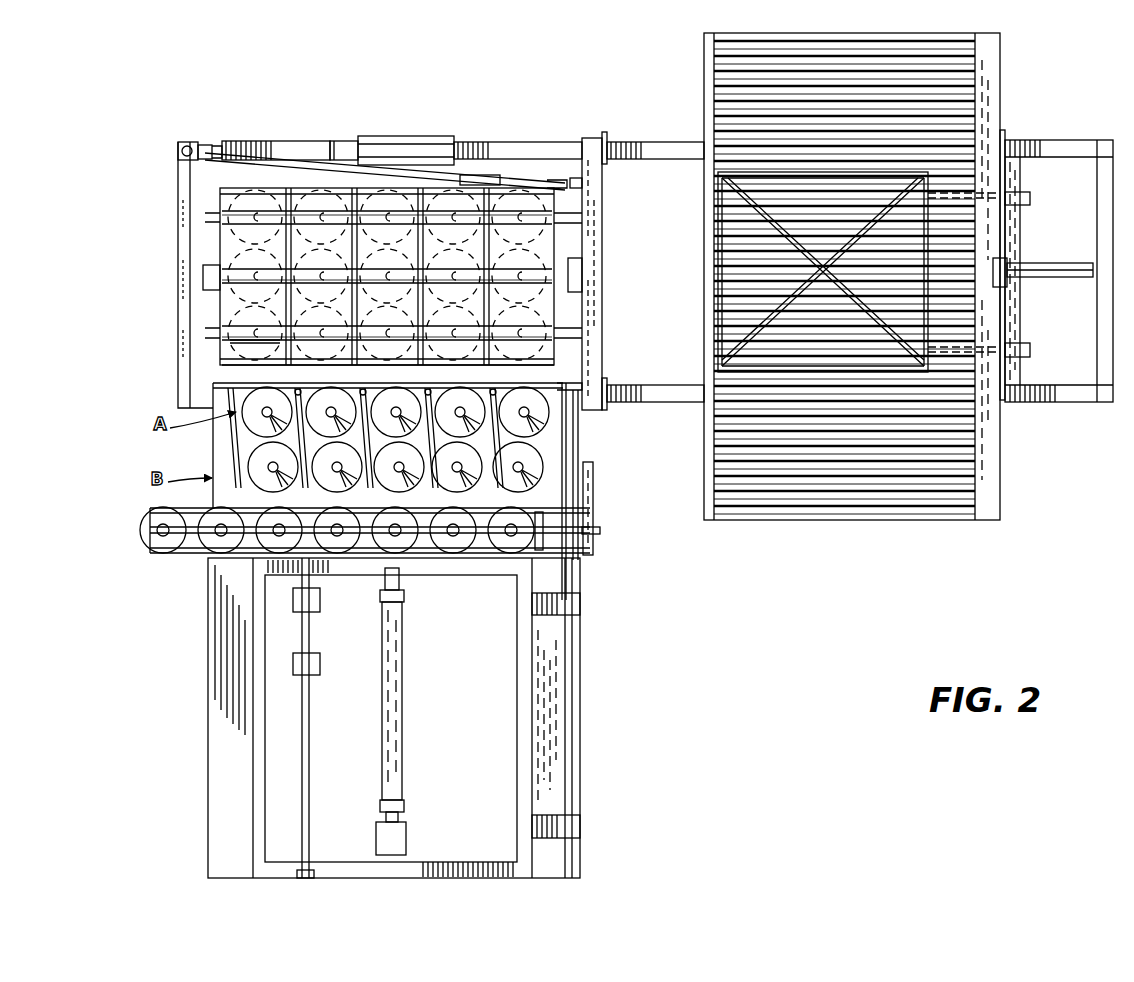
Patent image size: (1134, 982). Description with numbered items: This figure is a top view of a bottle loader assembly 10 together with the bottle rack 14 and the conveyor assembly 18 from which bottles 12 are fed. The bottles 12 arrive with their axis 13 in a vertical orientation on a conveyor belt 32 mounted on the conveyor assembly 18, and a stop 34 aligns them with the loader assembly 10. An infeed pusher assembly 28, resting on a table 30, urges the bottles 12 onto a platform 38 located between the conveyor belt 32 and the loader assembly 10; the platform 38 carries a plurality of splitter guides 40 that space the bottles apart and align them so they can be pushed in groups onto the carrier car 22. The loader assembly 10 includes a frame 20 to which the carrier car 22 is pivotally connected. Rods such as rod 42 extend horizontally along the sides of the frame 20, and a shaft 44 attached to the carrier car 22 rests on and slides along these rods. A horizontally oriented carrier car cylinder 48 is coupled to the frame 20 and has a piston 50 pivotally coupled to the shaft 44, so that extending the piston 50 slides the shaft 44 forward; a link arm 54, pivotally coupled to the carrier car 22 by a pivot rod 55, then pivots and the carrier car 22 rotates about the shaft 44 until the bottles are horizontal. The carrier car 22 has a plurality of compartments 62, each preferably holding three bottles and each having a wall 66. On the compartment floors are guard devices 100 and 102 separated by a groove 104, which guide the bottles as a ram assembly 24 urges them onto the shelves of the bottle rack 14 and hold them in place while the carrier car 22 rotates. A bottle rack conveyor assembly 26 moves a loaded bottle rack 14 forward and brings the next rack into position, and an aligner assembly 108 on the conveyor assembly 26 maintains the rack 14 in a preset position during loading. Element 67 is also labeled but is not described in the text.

The bottle loader assembly 10 is at (583, 90).
The bottles 12 is at (240, 444).
The axis 13 is at (548, 460).
The bottle rack 14 is at (682, 418).
The conveyor assembly 18 is at (594, 555).
The frame 20 is at (177, 147).
The carrier car 22 is at (578, 197).
The ram assembly 24 is at (226, 345).
The bottle rack conveyor assembly 26 is at (1008, 420).
The infeed pusher assembly 28 is at (405, 738).
The table 30 is at (583, 650).
The conveyor belt 32 is at (202, 516).
The stop 34 is at (576, 520).
The platform 38 is at (590, 432).
The splitter guides 40 is at (300, 460).
The rod 42 is at (500, 142).
The shaft 44 is at (413, 163).
The carrier car cylinder 48 is at (283, 141).
The piston 50 is at (357, 141).
The link arm 54 is at (208, 170).
The pivot rod 55 is at (186, 142).
The compartments 62 is at (296, 372).
The wall 66 is at (283, 270).
The pad 67 is at (578, 180).
The guard device 100 is at (548, 218).
The guard device 102 is at (543, 240).
The groove 104 is at (545, 228).
The aligner assembly 108 is at (1058, 268).